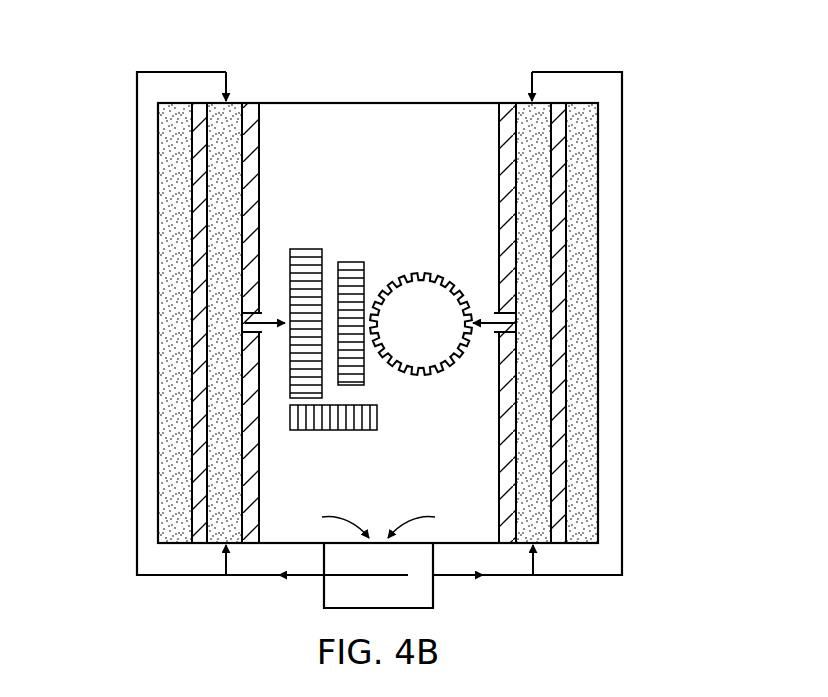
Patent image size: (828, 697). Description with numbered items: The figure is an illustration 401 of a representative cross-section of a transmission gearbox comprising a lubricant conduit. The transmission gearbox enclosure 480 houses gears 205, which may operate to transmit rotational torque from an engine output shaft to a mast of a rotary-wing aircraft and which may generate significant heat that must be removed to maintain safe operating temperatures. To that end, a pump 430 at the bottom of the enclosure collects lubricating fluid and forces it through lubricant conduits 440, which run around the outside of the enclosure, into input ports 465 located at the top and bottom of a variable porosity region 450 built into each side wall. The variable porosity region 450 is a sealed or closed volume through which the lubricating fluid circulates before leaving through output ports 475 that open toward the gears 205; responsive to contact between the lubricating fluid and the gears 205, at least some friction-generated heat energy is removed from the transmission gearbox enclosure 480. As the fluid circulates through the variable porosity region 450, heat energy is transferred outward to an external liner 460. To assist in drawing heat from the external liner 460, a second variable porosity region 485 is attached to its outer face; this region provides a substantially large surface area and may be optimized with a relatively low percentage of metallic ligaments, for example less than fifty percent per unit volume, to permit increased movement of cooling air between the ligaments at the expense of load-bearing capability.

The illustration 401 is at (103, 60).
The lubricant conduits 440 is at (137, 175).
The input ports 465 is at (229, 100).
The transmission gearbox enclosure 480 is at (428, 100).
The variable porosity region 485 is at (168, 460).
The external liner 460 is at (200, 397).
The variable porosity region 450 is at (240, 440).
The output ports 475 is at (240, 335).
The pump 430 is at (433, 595).
The gears 205 is at (467, 228).